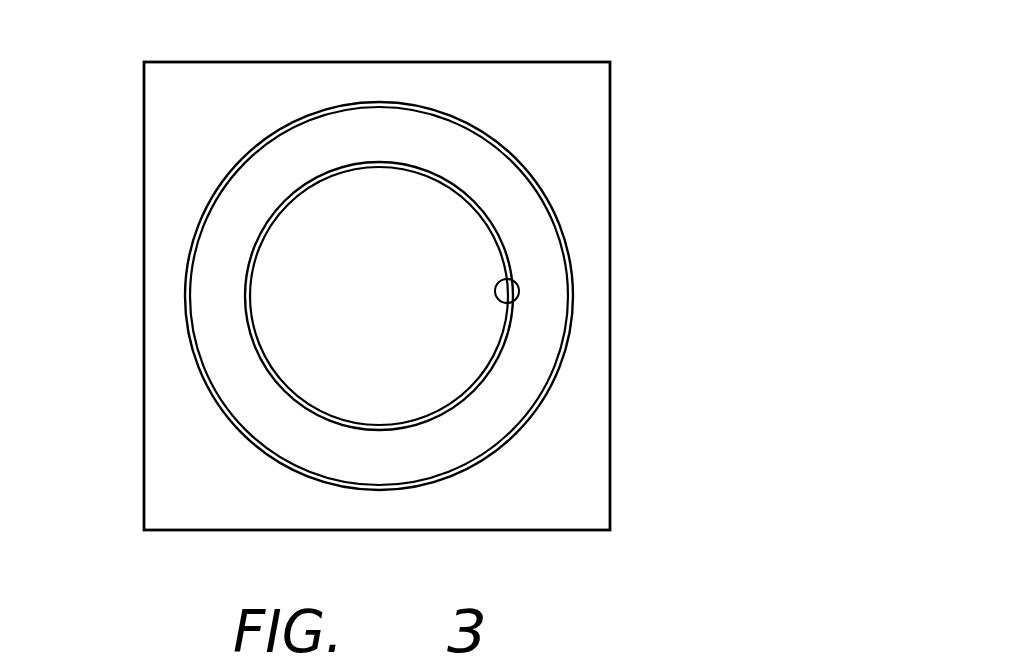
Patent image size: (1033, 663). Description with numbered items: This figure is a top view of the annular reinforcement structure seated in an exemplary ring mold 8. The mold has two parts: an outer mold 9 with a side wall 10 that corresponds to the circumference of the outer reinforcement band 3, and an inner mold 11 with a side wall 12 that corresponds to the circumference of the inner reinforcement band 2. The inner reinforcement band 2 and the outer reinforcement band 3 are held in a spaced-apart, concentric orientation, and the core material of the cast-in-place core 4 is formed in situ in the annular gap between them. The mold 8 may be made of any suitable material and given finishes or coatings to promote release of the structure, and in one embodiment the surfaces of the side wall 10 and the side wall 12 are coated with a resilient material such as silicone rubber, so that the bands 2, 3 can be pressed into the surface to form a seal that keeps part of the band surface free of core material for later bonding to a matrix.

The inner reinforcement band 2 is at (273, 210).
The outer reinforcement band 3 is at (190, 253).
The cast-in-place core 4 is at (227, 333).
The ring mold 8 is at (694, 81).
The outer mold 9 is at (583, 180).
The side wall 10 is at (553, 378).
The inner mold 11 is at (448, 360).
The side wall 12 is at (503, 303).